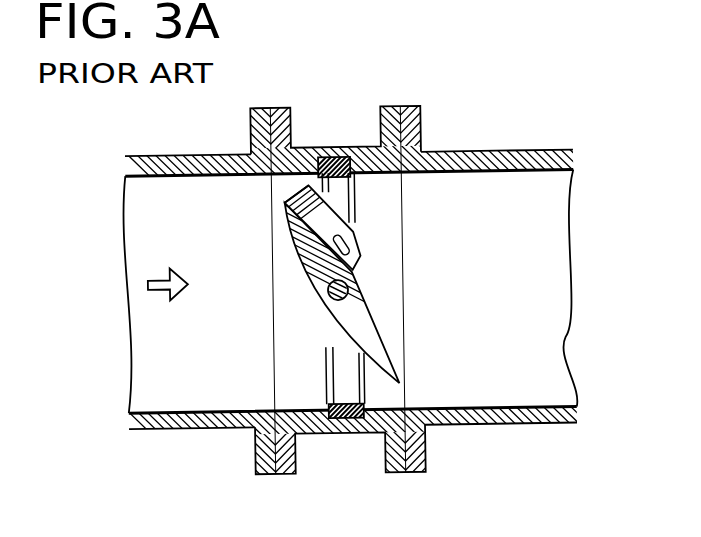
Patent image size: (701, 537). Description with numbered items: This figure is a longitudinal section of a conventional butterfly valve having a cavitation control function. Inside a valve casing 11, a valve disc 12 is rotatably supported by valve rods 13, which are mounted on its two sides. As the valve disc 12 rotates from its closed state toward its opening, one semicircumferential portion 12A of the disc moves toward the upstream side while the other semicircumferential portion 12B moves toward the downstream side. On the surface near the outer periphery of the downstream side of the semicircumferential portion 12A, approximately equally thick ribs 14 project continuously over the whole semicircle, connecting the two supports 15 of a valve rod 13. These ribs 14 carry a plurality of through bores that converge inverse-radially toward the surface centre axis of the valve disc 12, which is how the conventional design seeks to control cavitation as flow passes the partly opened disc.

The valve casing 11 is at (335, 147).
The valve disc 12 is at (296, 266).
The semicircumferential portion 12A is at (273, 172).
The semicircumferential portion 12B is at (365, 420).
The valve rod 13 is at (372, 298).
The rib 14 is at (352, 228).
The support 15 is at (297, 200).